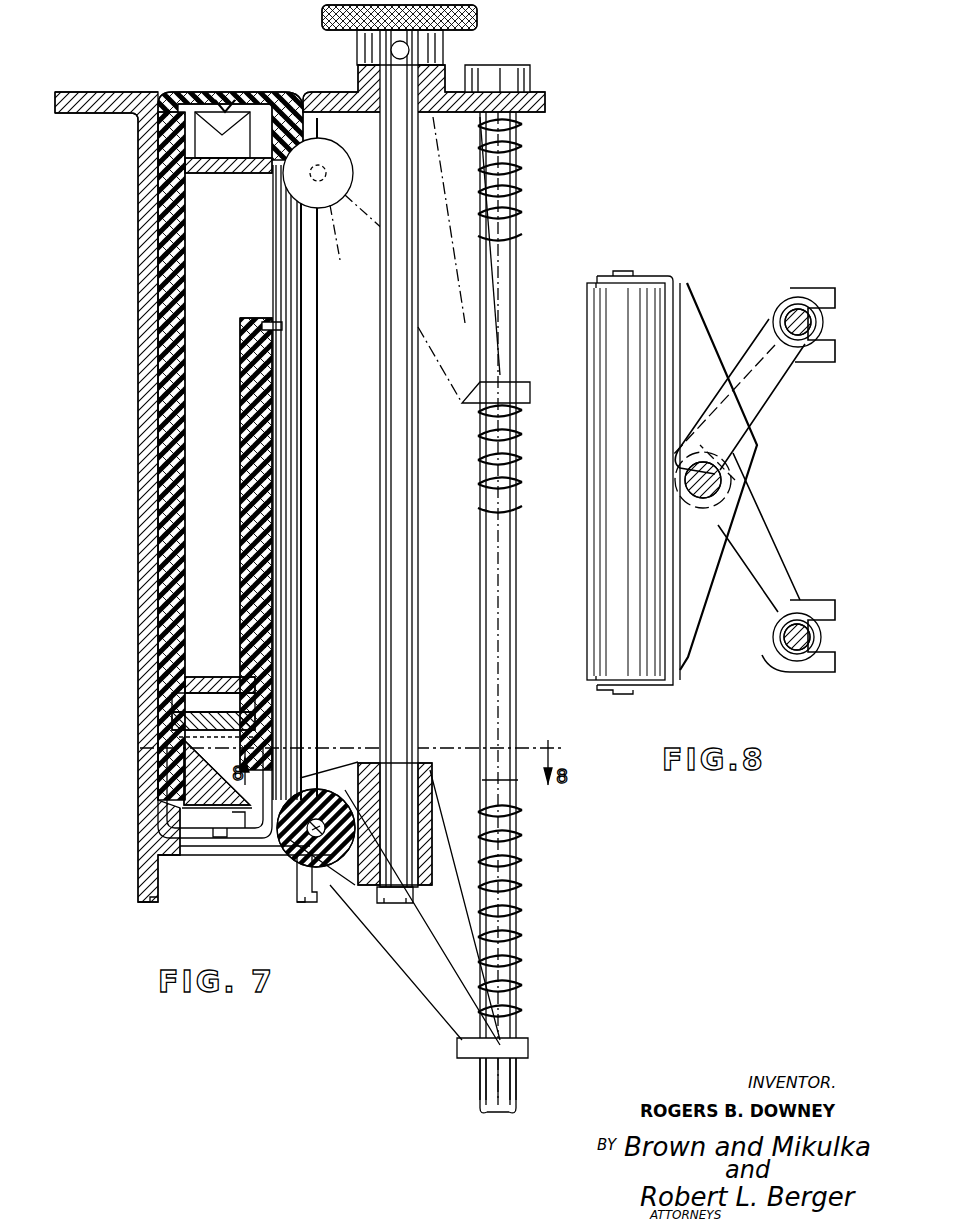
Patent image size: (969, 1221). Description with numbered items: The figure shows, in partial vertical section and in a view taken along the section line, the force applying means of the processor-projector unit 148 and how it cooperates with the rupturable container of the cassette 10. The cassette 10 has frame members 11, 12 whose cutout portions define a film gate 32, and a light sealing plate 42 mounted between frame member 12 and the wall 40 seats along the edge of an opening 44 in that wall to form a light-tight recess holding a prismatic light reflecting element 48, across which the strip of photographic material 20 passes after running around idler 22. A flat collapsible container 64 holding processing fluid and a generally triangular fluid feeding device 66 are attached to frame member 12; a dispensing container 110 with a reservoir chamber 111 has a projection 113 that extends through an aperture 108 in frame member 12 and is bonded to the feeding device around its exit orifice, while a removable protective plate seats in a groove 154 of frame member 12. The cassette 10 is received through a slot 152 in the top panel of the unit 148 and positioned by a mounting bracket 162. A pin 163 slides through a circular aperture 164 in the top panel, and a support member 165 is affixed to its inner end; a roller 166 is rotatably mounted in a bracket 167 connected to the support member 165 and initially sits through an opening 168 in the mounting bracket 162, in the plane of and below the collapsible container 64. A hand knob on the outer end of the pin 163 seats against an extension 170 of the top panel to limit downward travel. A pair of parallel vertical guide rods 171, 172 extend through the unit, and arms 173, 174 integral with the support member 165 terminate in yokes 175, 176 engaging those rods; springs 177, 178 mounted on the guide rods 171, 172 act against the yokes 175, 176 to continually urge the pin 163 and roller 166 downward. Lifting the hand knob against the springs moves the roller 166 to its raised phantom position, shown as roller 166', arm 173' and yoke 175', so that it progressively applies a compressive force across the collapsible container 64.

In FIG. 7, the cassette 10 is at (235, 98).
In FIG. 7, the frame member 11 is at (158, 262).
In FIG. 7, the frame member 12 is at (255, 100).
In FIG. 7, the strip of photographic material 20 is at (218, 98).
In FIG. 7, the idler 22 is at (195, 137).
In FIG. 7, the film gate 32 is at (205, 835).
In FIG. 7, the wall 40 is at (165, 608).
In FIG. 7, the light sealing plate 42 is at (175, 757).
In FIG. 7, the opening 44 is at (160, 742).
In FIG. 7, the light reflecting element 48 is at (200, 780).
In FIG. 7, the collapsible container 64 is at (285, 700).
In FIG. 7, the fluid feeding device 66 is at (290, 265).
In FIG. 7, the aperture 108 is at (258, 330).
In FIG. 7, the dispensing container 110 is at (175, 330).
In FIG. 7, the reservoir chamber 111 is at (205, 380).
In FIG. 7, the projection 113 is at (290, 320).
In FIG. 7, the processor-projector unit 148 is at (126, 78).
In FIG. 7, the slot 152 is at (187, 100).
In FIG. 7, the groove 154 is at (285, 230).
In FIG. 7, the mounting bracket 162 is at (140, 535).
In FIG. 7, the pin 163 is at (400, 480).
In FIG. 7, the circular aperture 164 is at (415, 70).
In FIG. 7, the support member 165 is at (420, 762).
In FIG. 7, the roller 166 is at (319, 795).
In FIG. 8, the roller 166 is at (622, 452).
In FIG. 7, the roller (phantom position) 166' is at (339, 202).
In FIG. 7, the bracket 167 is at (352, 882).
In FIG. 8, the bracket 167 is at (670, 283).
In FIG. 7, the opening 168 is at (310, 396).
In FIG. 7, the extension 170 is at (365, 76).
In FIG. 7, the guide rod 171 is at (513, 848).
In FIG. 8, the guide rod 171 is at (800, 620).
In FIG. 8, the guide rod 172 is at (805, 320).
In FIG. 7, the arm 173 is at (415, 907).
In FIG. 8, the arm 173 is at (755, 528).
In FIG. 7, the arm (phantom position) 173' is at (527, 606).
In FIG. 8, the arm 174 is at (747, 343).
In FIG. 7, the yoke 175 is at (520, 1057).
In FIG. 8, the yoke 175 is at (823, 636).
In FIG. 7, the yoke (phantom position) 175' is at (516, 373).
In FIG. 8, the yoke 176 is at (835, 360).
In FIG. 7, the spring 177 is at (512, 925).
In FIG. 8, the spring 177 is at (780, 656).
In FIG. 8, the spring 178 is at (793, 305).